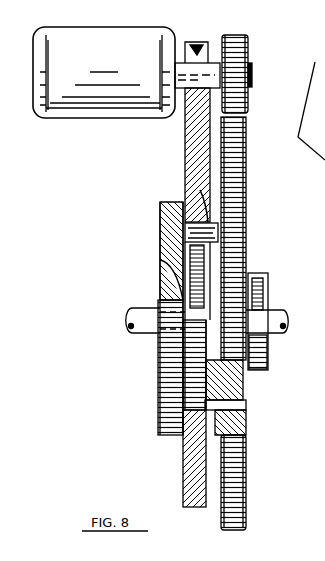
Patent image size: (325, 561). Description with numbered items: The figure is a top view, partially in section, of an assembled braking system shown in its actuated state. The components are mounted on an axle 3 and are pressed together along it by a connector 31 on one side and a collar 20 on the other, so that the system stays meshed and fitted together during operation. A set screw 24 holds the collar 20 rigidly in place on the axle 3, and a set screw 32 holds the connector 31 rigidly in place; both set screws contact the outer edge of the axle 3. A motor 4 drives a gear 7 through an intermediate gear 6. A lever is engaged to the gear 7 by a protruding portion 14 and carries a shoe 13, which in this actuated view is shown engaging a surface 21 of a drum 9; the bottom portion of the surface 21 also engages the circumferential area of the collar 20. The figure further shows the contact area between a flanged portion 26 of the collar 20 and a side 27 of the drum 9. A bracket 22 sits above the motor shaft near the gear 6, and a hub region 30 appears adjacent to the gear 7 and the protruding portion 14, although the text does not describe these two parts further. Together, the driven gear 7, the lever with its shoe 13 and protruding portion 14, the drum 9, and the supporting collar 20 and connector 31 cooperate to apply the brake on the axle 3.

The axle 3 is at (130, 316).
The motor 4 is at (110, 98).
The gear 6 is at (245, 62).
The gear 7 is at (240, 182).
The drum 9 is at (198, 475).
The shoe 13 is at (186, 190).
The protruding portion 14 is at (246, 405).
The collar 20 is at (218, 236).
The surface 21 is at (184, 433).
The bracket 22 is at (196, 45).
The set screw 24 is at (190, 258).
The flanged portion 26 is at (168, 378).
The side 27 is at (183, 202).
The hub 30 is at (245, 388).
The connector 31 is at (268, 296).
The set screw 32 is at (258, 278).